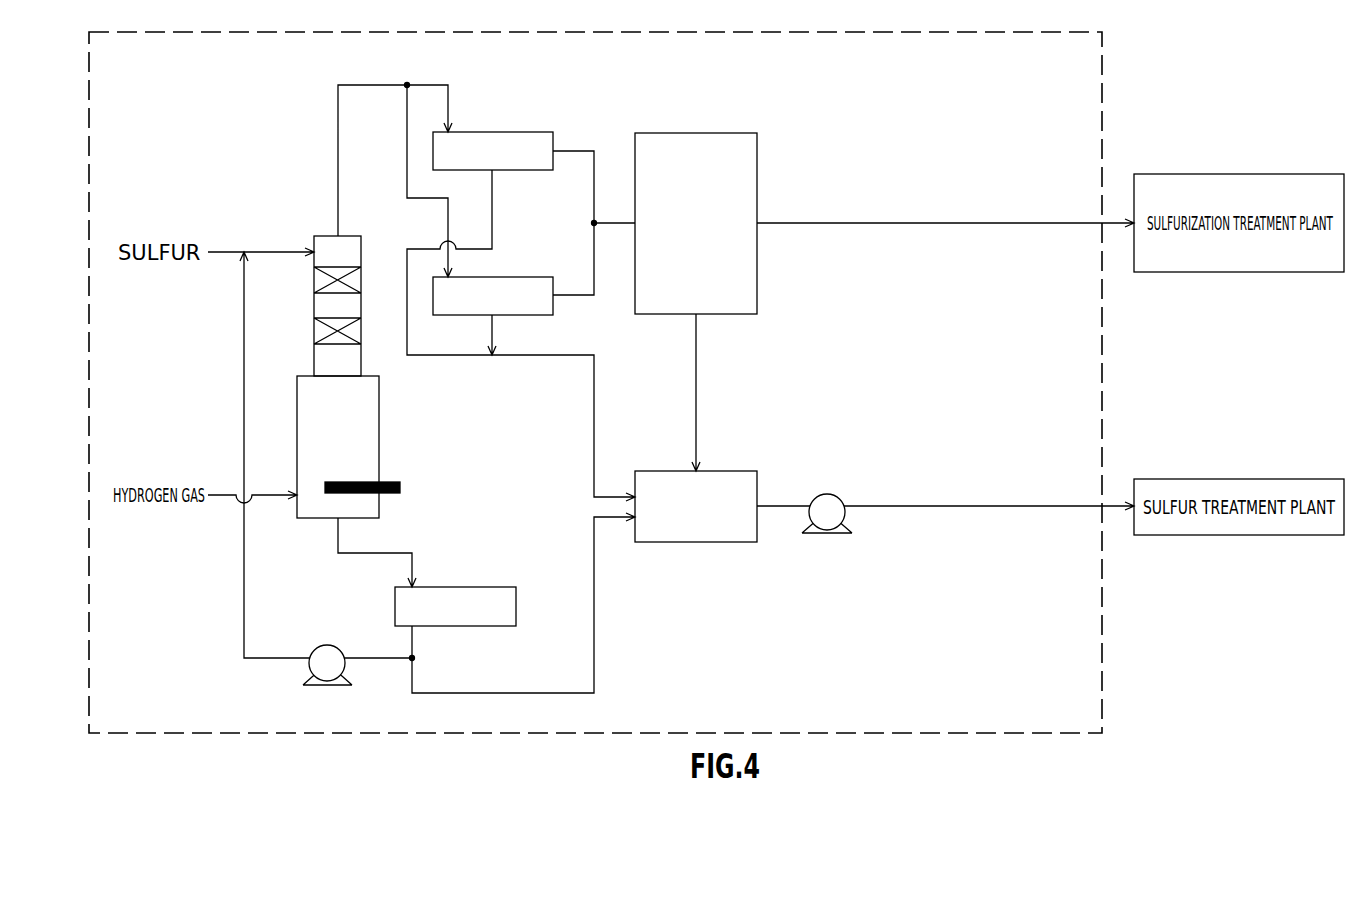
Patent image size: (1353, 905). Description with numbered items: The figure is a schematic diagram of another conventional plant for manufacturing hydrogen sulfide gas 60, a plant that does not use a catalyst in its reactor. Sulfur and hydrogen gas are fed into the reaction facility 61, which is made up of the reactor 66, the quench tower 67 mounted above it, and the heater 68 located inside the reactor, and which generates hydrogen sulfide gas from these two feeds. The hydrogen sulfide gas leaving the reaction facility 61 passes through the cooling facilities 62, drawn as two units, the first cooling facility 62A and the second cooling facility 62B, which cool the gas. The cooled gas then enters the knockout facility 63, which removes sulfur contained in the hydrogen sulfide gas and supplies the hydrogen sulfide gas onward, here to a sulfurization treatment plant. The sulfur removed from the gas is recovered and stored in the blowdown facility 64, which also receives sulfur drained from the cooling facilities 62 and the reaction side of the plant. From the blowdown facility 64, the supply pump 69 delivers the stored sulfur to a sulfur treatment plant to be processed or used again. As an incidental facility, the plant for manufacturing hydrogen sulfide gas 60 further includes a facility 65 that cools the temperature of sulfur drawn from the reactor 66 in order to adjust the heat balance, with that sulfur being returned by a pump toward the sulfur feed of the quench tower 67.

The plant for manufacturing hydrogen sulfide gas 60 is at (1050, 61).
The reaction facility 61 is at (363, 377).
The cooling facilities 62 is at (499, 179).
The cooling facility 62A is at (531, 132).
The cooling facility 62B is at (531, 277).
The knockout facility 63 is at (694, 133).
The blowdown facility 64 is at (728, 471).
The facility configured to cool the temperature of sulfur 65 is at (481, 587).
The reactor 66 is at (378, 447).
The quench tower 67 is at (314, 303).
The heater 68 is at (400, 488).
The supply pump 69 is at (825, 494).